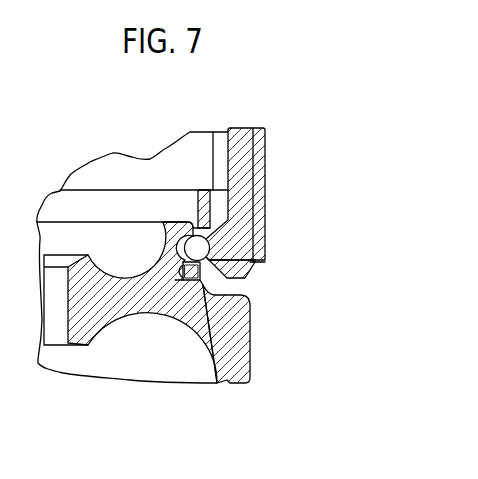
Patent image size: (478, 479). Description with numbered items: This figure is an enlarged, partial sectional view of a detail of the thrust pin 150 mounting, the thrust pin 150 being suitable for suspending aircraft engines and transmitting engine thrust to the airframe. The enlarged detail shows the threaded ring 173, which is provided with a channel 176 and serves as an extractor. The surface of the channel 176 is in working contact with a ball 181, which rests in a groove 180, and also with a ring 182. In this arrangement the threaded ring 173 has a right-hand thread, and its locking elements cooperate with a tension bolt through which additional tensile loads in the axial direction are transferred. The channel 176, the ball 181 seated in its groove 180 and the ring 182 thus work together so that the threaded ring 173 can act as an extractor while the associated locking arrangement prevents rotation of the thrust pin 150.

The thrust pin 150 is at (245, 168).
The ring 182 is at (212, 213).
The channel 176 is at (262, 259).
The ball 181 is at (248, 307).
The threaded ring 173 is at (123, 291).
The groove 180 is at (197, 248).